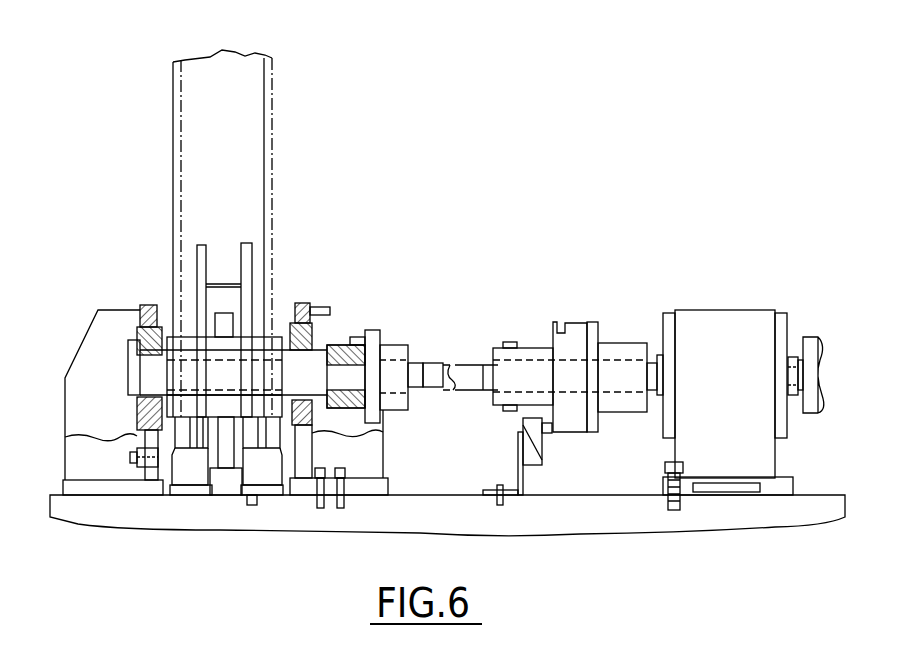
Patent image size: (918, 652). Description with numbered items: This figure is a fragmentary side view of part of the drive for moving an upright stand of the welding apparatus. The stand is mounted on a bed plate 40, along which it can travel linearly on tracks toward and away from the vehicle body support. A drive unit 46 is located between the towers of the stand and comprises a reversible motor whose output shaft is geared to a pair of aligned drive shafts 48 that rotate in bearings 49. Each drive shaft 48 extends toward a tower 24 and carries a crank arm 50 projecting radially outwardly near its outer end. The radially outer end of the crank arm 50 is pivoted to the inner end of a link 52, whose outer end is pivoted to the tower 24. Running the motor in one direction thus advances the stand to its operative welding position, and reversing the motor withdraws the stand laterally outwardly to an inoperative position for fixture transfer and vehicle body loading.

The tower 24 is at (173, 148).
The bed plate 40 is at (808, 494).
The drive unit 46 is at (615, 300).
The drive shaft 48 is at (458, 362).
The bearing 49 is at (140, 345).
The crank arm 50 is at (227, 320).
The link 52 is at (247, 254).